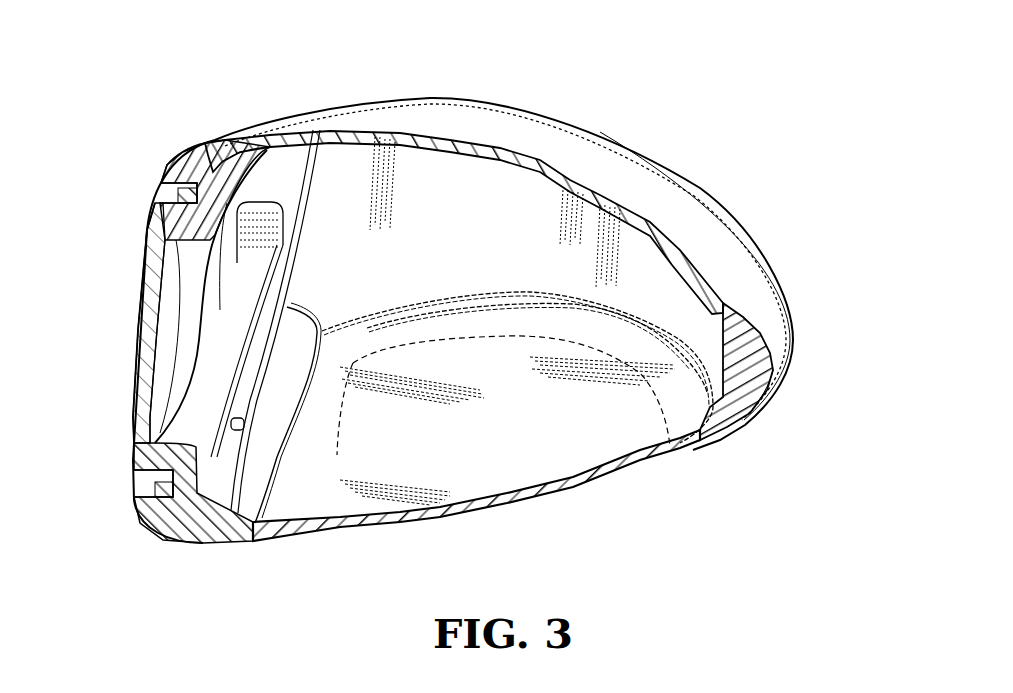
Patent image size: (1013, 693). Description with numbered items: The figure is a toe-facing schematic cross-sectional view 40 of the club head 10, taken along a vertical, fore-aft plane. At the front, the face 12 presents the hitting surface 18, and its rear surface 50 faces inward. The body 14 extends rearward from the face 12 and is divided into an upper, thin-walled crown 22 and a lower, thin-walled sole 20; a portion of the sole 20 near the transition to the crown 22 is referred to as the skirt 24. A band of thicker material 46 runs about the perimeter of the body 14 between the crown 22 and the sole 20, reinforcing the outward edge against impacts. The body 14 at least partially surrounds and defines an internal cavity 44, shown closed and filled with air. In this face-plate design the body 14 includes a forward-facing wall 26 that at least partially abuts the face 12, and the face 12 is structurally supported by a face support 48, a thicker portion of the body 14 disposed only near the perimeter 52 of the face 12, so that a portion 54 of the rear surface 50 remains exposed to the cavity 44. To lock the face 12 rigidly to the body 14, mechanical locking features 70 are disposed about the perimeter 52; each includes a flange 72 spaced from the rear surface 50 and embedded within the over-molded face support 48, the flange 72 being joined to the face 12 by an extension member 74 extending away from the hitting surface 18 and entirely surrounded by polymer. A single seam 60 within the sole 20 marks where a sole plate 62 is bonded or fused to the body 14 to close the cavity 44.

The club head 10 is at (636, 48).
The face 12 is at (125, 366).
The body 14 is at (660, 137).
The hitting surface 18 is at (143, 262).
The sole 20 is at (408, 526).
The crown 22 is at (500, 122).
The skirt 24 is at (772, 330).
The forward-facing wall 26 is at (150, 167).
The cross-sectional view 40 is at (148, 53).
The internal volume/cavity 44 is at (300, 478).
The band of thicker material 46 is at (745, 384).
The face support 48 is at (217, 162).
The rear surface 50 is at (183, 305).
The perimeter 52 is at (205, 195).
The exposed portion 54 is at (212, 270).
The seam 60 is at (340, 455).
The sole plate 62 is at (518, 470).
The mechanical locking feature 70 is at (170, 190).
The flange 72 is at (200, 197).
The extension member 74 is at (137, 327).